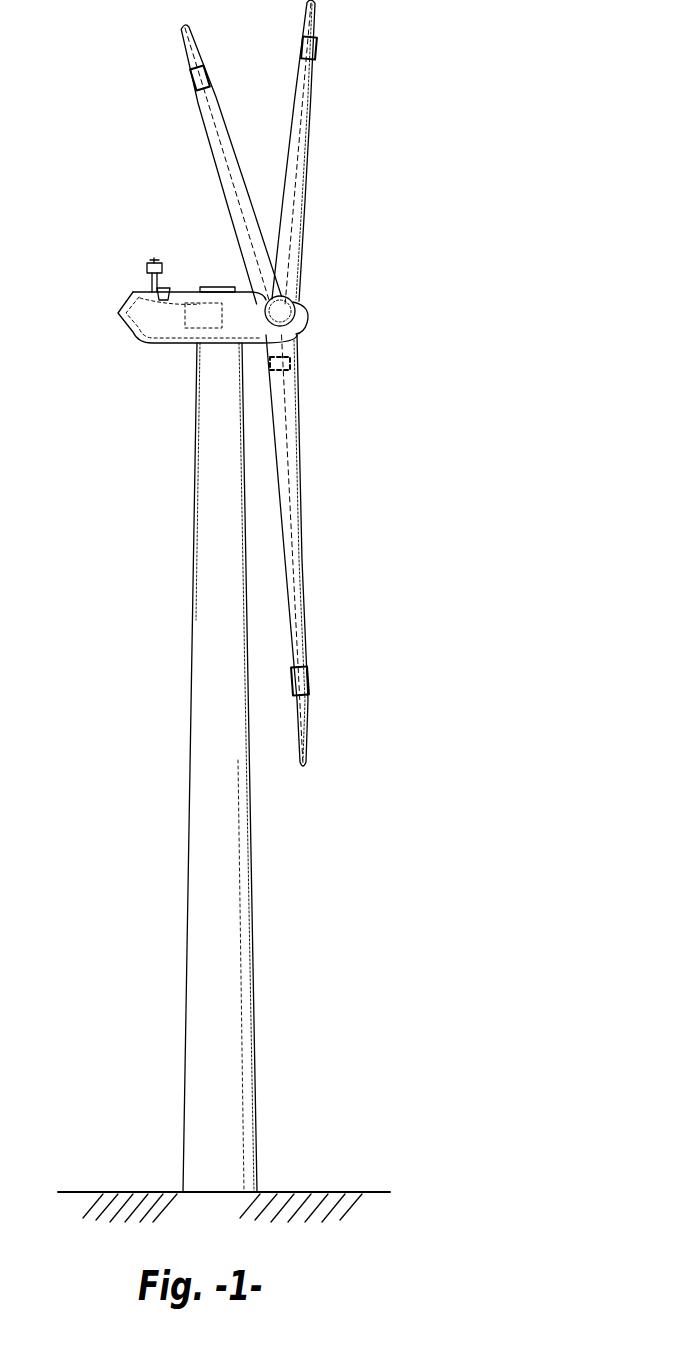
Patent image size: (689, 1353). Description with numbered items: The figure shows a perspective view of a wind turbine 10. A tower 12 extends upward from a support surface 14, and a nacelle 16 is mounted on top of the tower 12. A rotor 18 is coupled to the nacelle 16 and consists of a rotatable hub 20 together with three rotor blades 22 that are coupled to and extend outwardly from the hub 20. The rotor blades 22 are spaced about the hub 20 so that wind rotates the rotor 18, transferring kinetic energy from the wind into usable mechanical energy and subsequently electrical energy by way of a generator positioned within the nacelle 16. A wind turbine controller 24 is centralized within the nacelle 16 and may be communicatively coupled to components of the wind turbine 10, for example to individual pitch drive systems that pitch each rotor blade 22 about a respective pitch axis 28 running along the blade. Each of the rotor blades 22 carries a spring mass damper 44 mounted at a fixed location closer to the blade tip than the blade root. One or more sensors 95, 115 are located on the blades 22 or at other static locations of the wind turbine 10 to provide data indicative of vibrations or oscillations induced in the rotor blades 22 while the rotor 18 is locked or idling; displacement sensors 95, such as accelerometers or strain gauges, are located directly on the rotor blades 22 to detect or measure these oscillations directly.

The wind turbine 10 is at (444, 86).
The tower 12 is at (203, 835).
The support surface 14 is at (138, 1190).
The nacelle 16 is at (160, 345).
The rotor 18 is at (318, 290).
The rotatable hub 20 is at (307, 322).
The rotor blade 22 is at (232, 143).
The wind turbine controller 24 is at (137, 292).
The pitch axis 28 is at (234, 222).
The spring mass damper 44 is at (192, 80).
The displacement sensor 95 is at (280, 372).
The sensor 115 is at (165, 289).